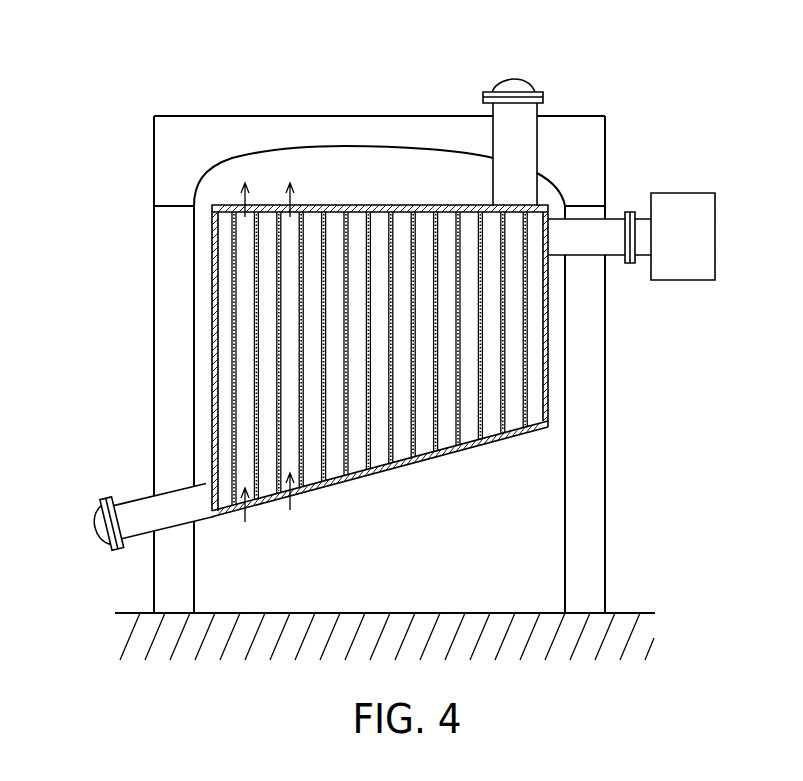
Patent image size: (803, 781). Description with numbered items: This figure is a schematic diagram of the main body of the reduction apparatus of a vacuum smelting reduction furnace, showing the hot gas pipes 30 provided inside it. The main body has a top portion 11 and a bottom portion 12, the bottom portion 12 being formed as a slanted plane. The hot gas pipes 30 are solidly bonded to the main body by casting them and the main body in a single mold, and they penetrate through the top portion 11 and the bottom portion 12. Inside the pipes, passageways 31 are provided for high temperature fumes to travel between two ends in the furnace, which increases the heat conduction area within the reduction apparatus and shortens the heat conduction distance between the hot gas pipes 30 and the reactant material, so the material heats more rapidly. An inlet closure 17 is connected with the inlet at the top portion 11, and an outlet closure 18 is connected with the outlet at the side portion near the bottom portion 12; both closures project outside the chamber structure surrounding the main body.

The top portion 11 is at (353, 205).
The bottom portion 12 is at (455, 452).
The inlet closure 17 is at (512, 82).
The outlet closure 18 is at (98, 521).
The hot gas pipes 30 is at (257, 502).
The passageways 31 is at (380, 473).